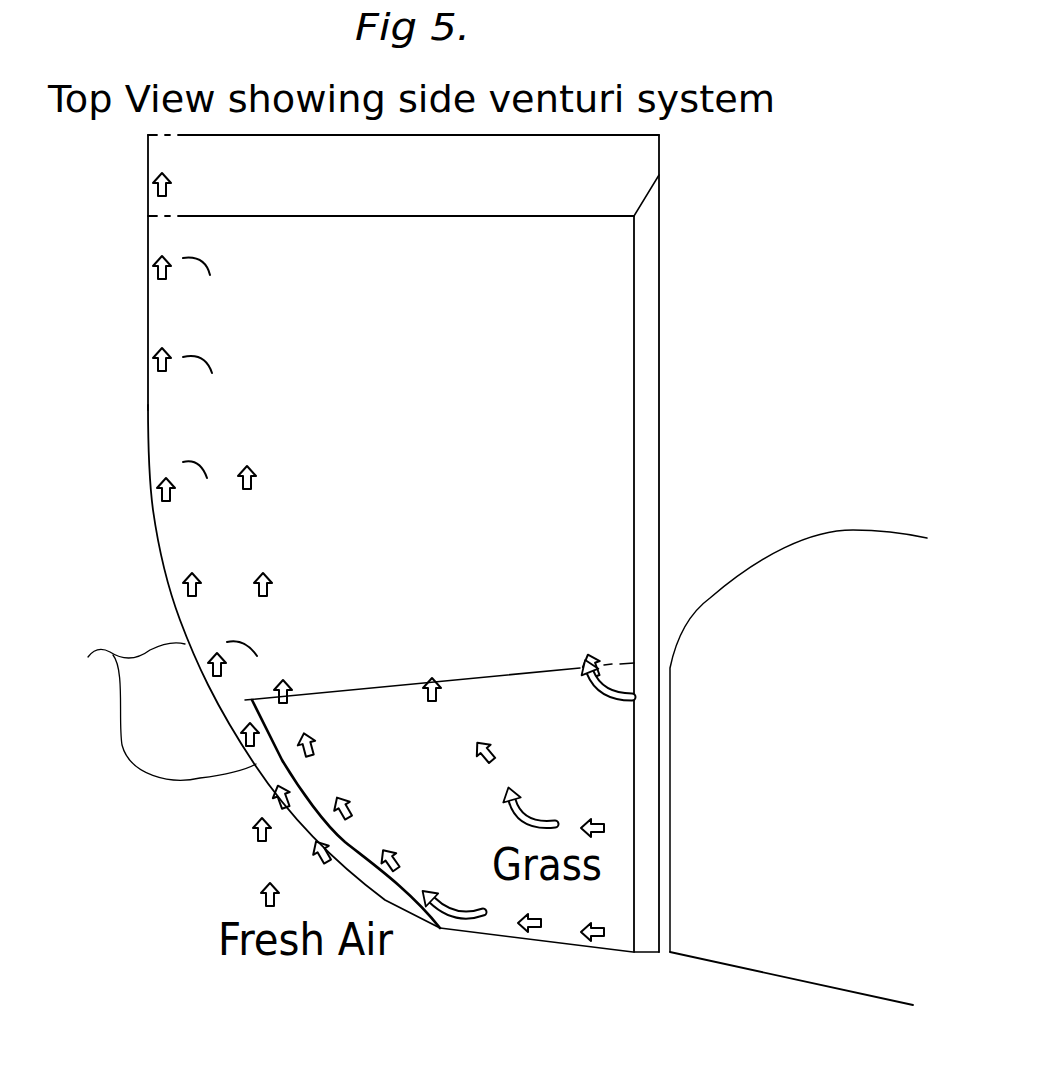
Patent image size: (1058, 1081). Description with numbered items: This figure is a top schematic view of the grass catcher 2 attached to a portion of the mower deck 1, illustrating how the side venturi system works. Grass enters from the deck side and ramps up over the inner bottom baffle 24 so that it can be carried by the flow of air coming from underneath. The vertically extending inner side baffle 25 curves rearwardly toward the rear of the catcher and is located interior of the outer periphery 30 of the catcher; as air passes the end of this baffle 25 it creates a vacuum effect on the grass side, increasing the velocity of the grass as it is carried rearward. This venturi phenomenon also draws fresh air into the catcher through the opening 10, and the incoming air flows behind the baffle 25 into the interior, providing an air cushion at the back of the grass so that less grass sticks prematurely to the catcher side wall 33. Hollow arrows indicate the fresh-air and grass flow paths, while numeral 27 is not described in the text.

The mower deck 1 is at (770, 582).
The grass catcher 2 is at (615, 345).
The opening 10 is at (235, 703).
The inner bottom baffle 24 is at (496, 694).
The inner side baffle 25 is at (313, 802).
The air passage 27 is at (232, 566).
The outer periphery 30 is at (147, 711).
The catcher side wall 33 is at (150, 458).